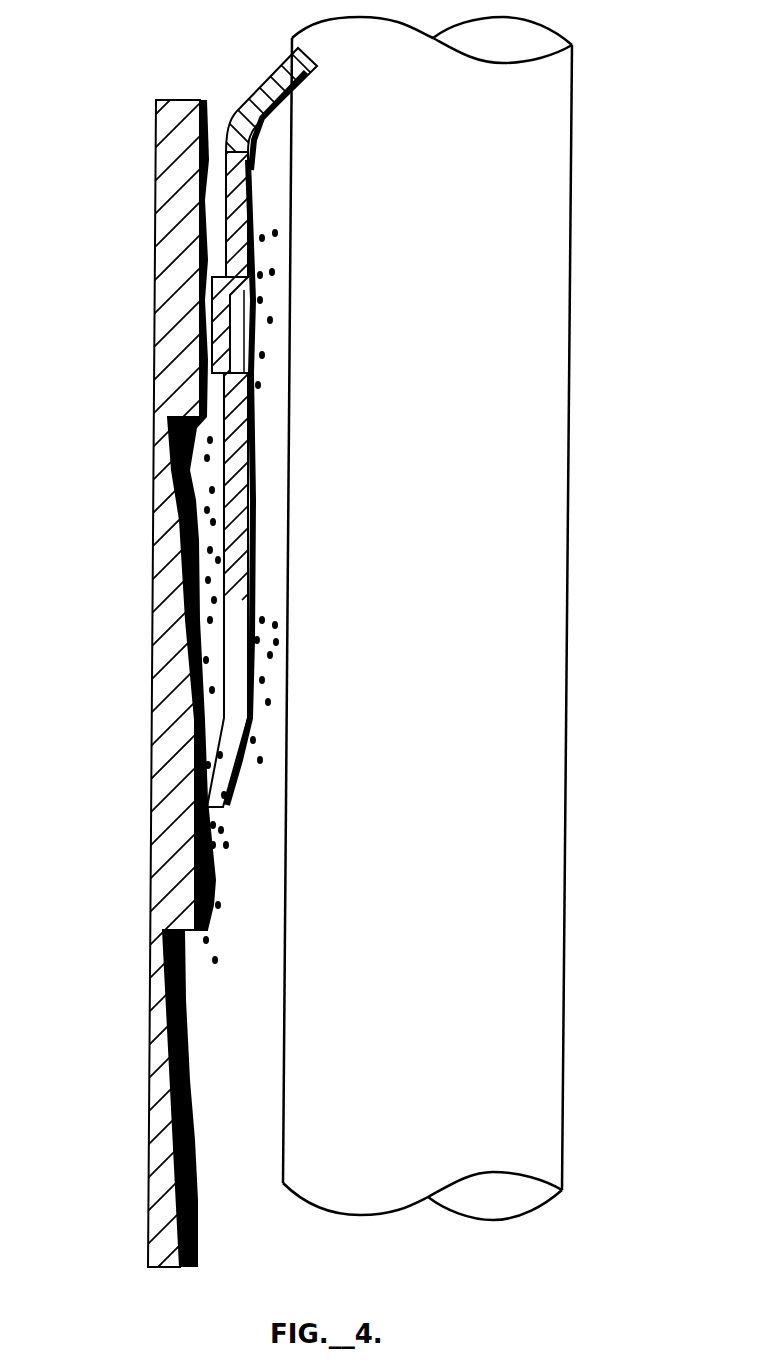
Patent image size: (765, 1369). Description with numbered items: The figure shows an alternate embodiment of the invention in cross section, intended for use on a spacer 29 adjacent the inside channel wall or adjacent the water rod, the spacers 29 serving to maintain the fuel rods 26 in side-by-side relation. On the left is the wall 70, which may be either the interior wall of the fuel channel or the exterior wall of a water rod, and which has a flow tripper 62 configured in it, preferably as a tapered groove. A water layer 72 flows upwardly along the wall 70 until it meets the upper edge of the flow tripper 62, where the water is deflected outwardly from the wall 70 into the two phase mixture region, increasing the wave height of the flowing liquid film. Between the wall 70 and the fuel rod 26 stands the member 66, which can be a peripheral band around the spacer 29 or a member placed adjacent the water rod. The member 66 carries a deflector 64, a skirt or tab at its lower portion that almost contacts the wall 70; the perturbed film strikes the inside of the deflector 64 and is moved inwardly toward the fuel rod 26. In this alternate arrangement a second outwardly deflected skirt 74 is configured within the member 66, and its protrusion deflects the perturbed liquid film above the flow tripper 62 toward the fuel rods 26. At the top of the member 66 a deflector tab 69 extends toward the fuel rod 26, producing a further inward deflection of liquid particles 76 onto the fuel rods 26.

The fuel rod 26 is at (447, 456).
The spacer 29 is at (220, 262).
The flow tripper 62 is at (165, 980).
The deflector 64 is at (207, 794).
The member 66 is at (228, 465).
The deflector tab 69 is at (270, 80).
The wall 70 is at (156, 376).
The water layer 72 is at (190, 1138).
The second outwardly deflected skirt 74 is at (207, 322).
The particles 76 is at (258, 275).